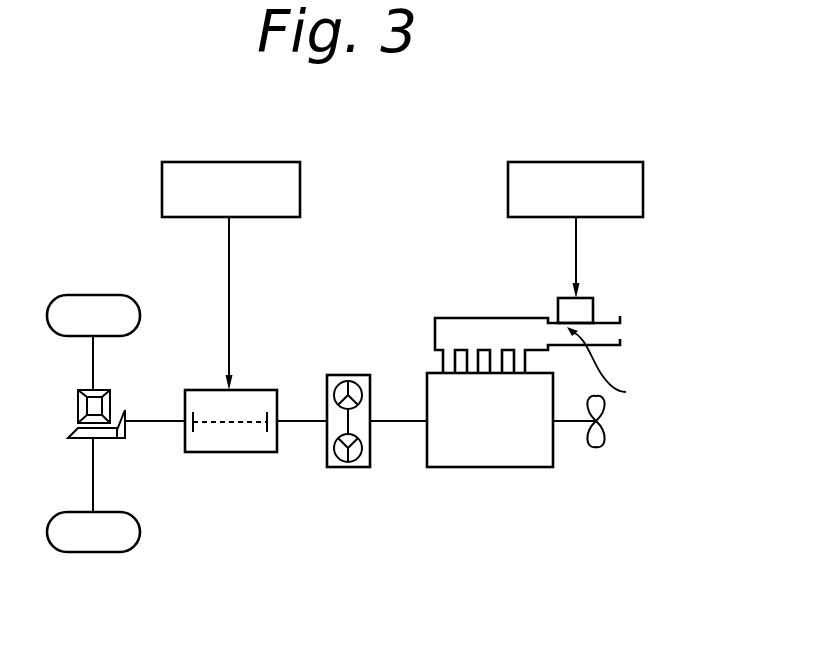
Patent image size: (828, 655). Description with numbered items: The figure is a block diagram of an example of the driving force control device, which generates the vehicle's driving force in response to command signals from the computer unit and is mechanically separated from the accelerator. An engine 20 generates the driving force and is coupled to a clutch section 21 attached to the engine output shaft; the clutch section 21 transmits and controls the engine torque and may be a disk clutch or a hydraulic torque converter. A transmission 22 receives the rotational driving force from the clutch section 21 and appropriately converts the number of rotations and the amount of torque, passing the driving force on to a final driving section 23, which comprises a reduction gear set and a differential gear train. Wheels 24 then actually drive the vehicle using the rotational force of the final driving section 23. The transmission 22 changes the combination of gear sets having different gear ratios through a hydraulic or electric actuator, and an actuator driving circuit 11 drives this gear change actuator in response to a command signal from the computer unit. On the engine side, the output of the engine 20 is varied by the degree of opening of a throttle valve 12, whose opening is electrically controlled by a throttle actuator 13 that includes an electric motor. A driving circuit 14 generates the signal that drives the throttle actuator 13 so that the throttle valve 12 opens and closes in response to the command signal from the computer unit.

The actuator driving circuit 11 is at (300, 193).
The driving circuit 14 is at (643, 192).
The throttle actuator 13 is at (593, 306).
The throttle valve 12 is at (673, 396).
The engine 20 is at (506, 468).
The clutch section 21 is at (348, 467).
The transmission 22 is at (210, 452).
The final driving section 23 is at (111, 394).
The wheels 24 is at (97, 295).